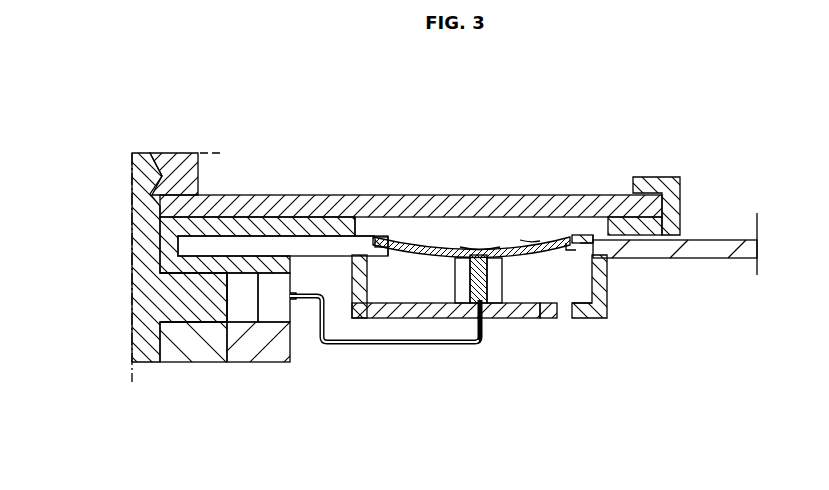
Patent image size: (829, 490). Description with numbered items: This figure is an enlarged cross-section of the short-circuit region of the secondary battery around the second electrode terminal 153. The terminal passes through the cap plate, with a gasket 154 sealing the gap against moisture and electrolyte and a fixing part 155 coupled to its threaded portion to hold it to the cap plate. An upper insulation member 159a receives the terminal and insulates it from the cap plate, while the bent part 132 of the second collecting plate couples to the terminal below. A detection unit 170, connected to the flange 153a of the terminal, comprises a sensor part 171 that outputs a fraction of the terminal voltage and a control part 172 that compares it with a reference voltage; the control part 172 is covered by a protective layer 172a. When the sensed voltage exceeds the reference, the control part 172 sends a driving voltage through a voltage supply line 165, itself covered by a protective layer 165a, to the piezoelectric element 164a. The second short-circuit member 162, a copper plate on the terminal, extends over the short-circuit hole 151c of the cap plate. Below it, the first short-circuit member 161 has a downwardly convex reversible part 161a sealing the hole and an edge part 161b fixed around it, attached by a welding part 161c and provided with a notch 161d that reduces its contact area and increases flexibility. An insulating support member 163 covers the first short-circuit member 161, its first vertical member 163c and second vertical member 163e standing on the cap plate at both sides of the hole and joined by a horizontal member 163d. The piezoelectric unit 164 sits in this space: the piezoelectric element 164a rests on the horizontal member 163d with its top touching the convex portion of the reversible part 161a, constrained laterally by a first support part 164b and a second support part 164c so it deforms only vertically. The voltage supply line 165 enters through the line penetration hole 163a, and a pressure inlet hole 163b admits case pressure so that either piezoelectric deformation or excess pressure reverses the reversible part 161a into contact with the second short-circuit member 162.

The bent part 132 is at (188, 355).
The short-circuit hole 151c is at (575, 250).
The second electrode terminal 153 is at (143, 226).
The flange 153a is at (190, 292).
The gasket 154 is at (190, 246).
The fixing part 155 is at (178, 158).
The upper insulation member 159a is at (663, 180).
The first short-circuit member 161 is at (530, 135).
The reversible part 161a is at (530, 240).
The edge part 161b is at (568, 237).
The welding part 161c is at (610, 237).
The notch 161d is at (590, 237).
The second short-circuit member 162 is at (245, 203).
The support member 163 is at (604, 322).
The line penetration hole 163a is at (489, 318).
The pressure inlet hole 163b is at (565, 306).
The first vertical member 163c is at (352, 262).
The horizontal member 163d is at (400, 312).
The second vertical member 163e is at (605, 295).
The piezoelectric unit 164 is at (400, 109).
The piezoelectric element 164a is at (470, 240).
The first support part 164b is at (427, 247).
The second support part 164c is at (507, 247).
The voltage supply line 165 is at (342, 347).
The protective layer 165a is at (433, 347).
The detection unit 170 is at (285, 434).
The sensor part 171 is at (243, 313).
The control part 172 is at (268, 313).
The protective layer 172a is at (303, 282).